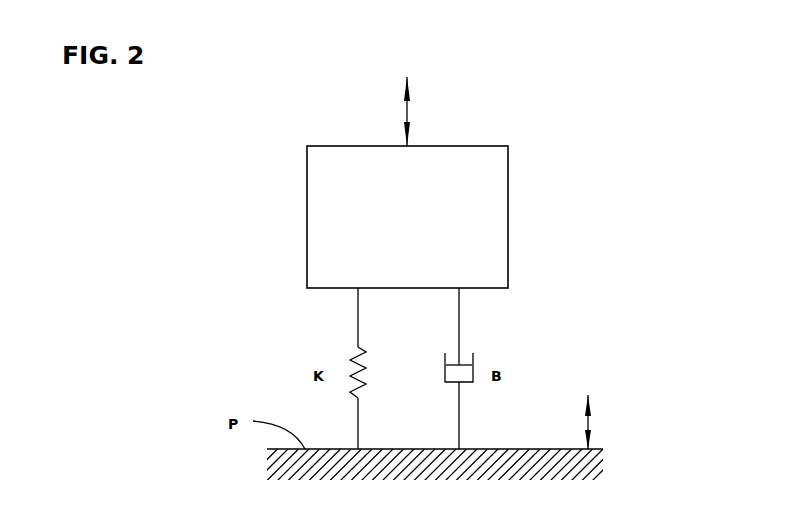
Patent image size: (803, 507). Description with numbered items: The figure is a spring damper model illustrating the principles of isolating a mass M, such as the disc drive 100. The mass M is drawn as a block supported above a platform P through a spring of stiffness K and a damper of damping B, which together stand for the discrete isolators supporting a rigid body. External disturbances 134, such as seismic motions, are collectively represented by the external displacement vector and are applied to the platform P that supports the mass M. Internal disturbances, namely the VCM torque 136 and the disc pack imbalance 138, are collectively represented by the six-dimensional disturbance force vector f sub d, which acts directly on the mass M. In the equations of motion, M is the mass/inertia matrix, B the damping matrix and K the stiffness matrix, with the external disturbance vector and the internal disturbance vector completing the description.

The disc drive 100 is at (508, 228).
The external disturbances 134 is at (590, 422).
The VCM torque 136 is at (375, 111).
The disc pack imbalance 138 is at (407, 110).